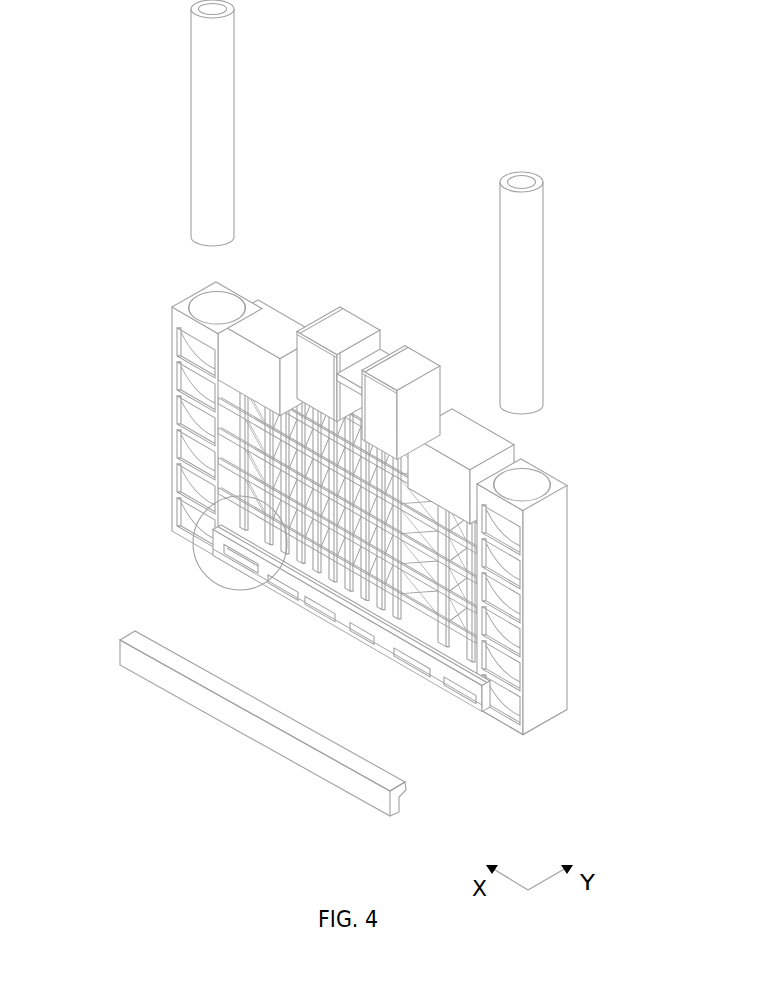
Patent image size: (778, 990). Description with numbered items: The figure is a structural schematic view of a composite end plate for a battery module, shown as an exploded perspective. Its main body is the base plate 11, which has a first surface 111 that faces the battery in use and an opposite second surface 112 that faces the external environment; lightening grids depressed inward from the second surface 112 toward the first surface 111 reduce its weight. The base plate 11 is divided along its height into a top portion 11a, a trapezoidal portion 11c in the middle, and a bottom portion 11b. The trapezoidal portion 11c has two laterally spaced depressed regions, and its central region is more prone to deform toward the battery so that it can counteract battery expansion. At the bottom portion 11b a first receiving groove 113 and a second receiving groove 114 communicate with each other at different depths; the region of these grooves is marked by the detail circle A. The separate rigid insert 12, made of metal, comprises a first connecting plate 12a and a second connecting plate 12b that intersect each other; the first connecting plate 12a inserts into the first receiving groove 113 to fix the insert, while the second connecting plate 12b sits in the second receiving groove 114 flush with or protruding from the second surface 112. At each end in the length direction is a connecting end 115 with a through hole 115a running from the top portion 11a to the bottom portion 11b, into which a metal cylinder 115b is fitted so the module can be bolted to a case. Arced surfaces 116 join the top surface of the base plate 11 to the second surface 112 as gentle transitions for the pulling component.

The base plate 11 is at (273, 483).
The top portion 11a is at (228, 362).
The bottom portion 11b is at (185, 525).
The trapezoidal portion 11c is at (328, 497).
The rigid insert 12 is at (263, 736).
The first connecting plate 12a is at (227, 692).
The second connecting plate 12b is at (185, 693).
The first surface 111 is at (570, 680).
The second surface 112 is at (507, 712).
The first receiving groove 113 is at (250, 557).
The second receiving groove 114 is at (305, 618).
The connecting end 115 is at (417, 546).
The through hole 115a is at (212, 308).
The cylinder 115b is at (205, 180).
The arced surface 116 is at (290, 333).
The detail region A is at (195, 552).